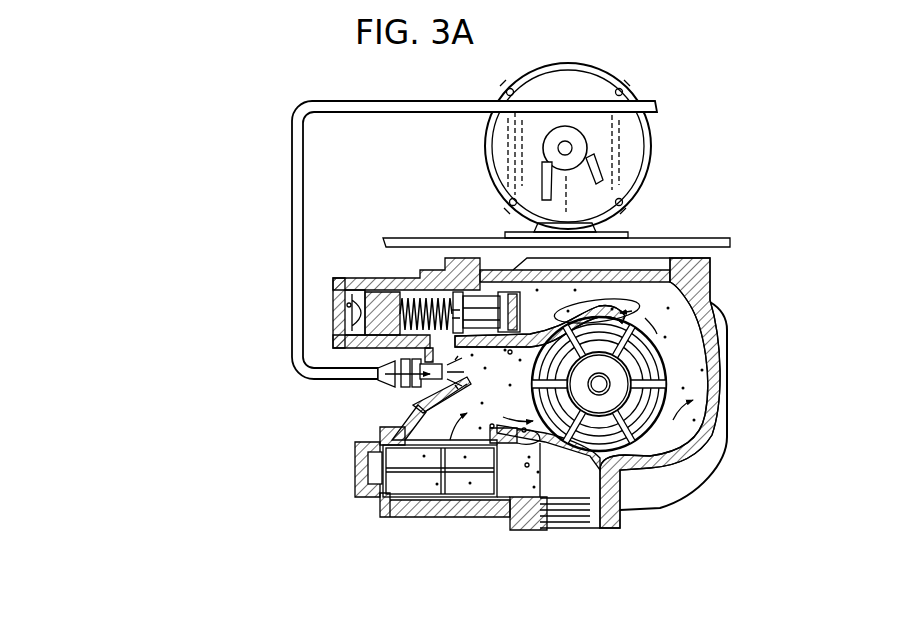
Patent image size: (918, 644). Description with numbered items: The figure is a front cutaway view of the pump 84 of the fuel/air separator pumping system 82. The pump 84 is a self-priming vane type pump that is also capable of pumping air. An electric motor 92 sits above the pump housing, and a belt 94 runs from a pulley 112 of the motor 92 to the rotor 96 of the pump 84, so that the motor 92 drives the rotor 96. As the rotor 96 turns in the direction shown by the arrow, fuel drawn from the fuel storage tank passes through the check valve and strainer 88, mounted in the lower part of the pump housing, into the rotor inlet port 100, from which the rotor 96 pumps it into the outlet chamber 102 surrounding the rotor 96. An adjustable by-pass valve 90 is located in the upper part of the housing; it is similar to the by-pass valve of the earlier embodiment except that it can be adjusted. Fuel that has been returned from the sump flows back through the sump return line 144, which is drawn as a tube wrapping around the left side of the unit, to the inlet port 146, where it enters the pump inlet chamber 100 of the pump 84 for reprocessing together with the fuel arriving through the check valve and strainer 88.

The fuel/air separator pumping system 82 is at (850, 339).
The pump 84 is at (712, 283).
The check valve and strainer 88 is at (428, 490).
The by-pass valve 90 is at (480, 290).
The motor 92 is at (572, 98).
The belt 94 is at (594, 180).
The rotor 96 is at (652, 376).
The rotor inlet port 100 is at (410, 416).
The outlet chamber 102 is at (700, 394).
The pulley 112 is at (583, 148).
The sump return line 144 is at (298, 283).
The inlet port 146 is at (425, 384).